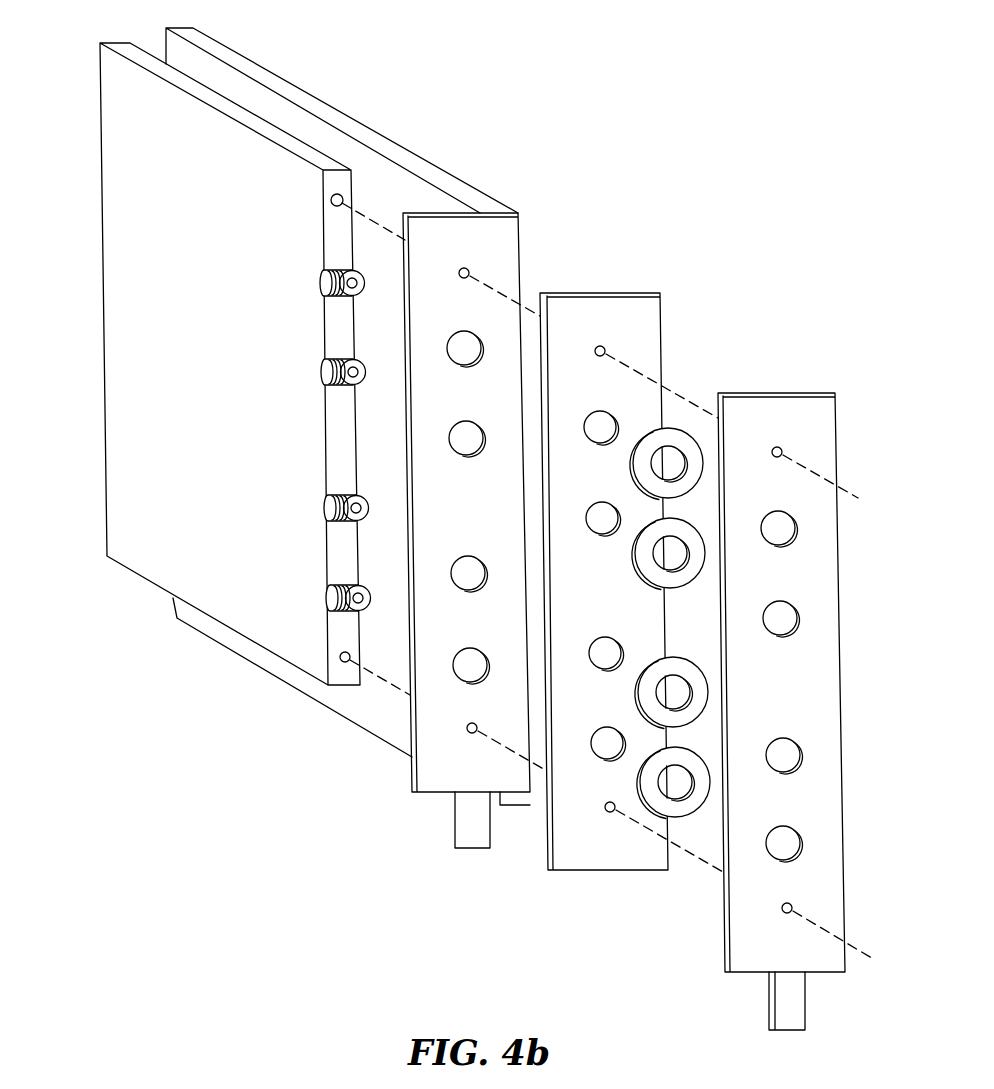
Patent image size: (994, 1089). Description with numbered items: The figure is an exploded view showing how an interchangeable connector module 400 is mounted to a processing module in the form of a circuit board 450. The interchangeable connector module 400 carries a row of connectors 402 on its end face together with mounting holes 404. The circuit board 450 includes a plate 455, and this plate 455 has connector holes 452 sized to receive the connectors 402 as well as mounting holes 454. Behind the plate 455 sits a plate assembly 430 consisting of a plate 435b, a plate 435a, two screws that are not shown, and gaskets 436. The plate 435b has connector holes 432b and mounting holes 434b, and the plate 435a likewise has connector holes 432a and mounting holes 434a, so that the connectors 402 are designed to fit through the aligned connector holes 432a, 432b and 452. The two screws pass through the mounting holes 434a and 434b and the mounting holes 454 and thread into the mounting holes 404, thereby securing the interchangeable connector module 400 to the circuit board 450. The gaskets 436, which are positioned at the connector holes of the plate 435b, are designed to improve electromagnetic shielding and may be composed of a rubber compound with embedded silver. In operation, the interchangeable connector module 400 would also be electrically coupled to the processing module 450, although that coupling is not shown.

The interchangeable connector module 400 is at (199, 150).
The connectors 402 is at (330, 597).
The mounting holes 404 is at (344, 661).
The plate assembly 430 is at (704, 222).
The connector holes 432a is at (778, 849).
The connector holes 432b is at (602, 746).
The mounting holes 434a is at (787, 912).
The mounting holes 434b is at (609, 810).
The plate 435a is at (742, 680).
The plate 435b is at (597, 603).
The gaskets 436 is at (662, 800).
The circuit board 450 is at (318, 140).
The connector holes 452 is at (470, 668).
The mounting holes 454 is at (472, 731).
The plate 455 is at (432, 494).